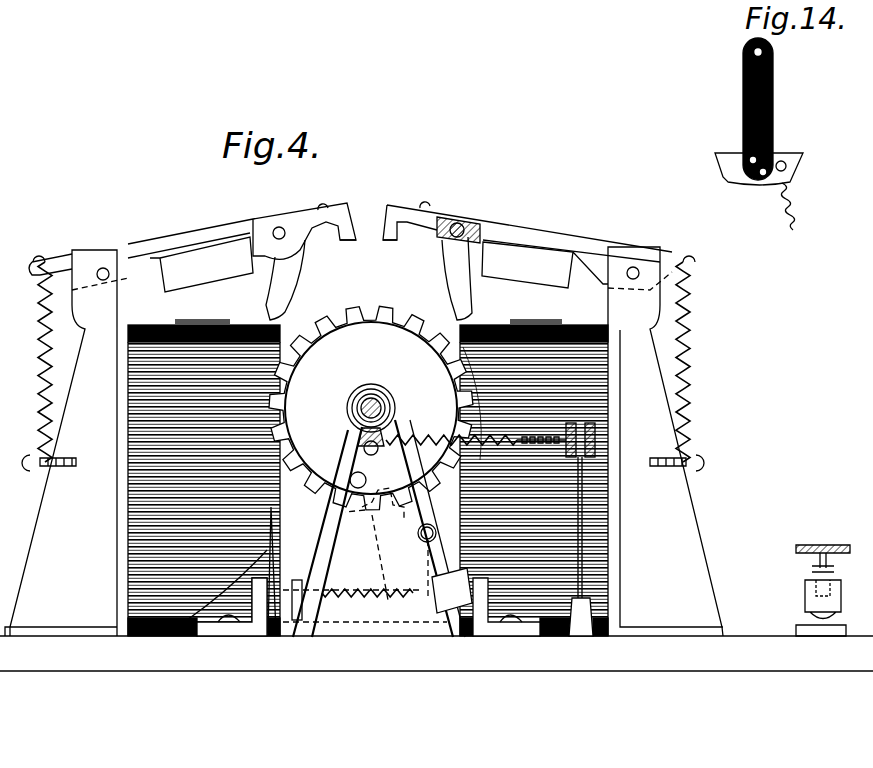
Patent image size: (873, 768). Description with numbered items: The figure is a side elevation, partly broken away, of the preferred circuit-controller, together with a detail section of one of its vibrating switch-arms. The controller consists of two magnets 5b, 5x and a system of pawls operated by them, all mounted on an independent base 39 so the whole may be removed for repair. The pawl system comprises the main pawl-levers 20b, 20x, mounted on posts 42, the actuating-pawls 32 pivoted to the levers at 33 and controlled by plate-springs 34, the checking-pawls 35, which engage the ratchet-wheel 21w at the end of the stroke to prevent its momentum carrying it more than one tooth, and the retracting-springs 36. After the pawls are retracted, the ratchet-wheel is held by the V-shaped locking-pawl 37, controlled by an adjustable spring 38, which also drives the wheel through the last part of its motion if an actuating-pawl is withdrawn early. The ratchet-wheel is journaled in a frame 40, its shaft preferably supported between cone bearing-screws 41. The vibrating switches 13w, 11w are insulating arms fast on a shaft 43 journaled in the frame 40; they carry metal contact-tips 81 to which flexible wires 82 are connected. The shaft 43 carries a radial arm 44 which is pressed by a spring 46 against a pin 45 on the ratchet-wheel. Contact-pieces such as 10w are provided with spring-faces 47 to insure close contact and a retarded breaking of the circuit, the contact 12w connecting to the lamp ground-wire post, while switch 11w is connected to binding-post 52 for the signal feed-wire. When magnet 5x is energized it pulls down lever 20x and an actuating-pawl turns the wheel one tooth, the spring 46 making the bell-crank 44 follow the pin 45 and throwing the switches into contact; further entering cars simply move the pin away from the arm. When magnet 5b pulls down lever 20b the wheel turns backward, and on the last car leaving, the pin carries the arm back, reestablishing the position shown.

In FIG. 4, the magnet 5b is at (217, 313).
In FIG. 4, the magnet 5x is at (521, 320).
In FIG. 4, the contact-piece 10w is at (252, 638).
In FIG. 4, the vibrating switch 11w is at (442, 575).
In FIG. 4, the contact 12w is at (505, 628).
In FIG. 14, the vibrating switch 13w is at (776, 82).
In FIG. 4, the main pawl-lever 20b is at (190, 225).
In FIG. 4, the main pawl-lever 20x is at (548, 236).
In FIG. 4, the ratchet-wheel 21w is at (375, 408).
In FIG. 4, the actuating-pawl 32 is at (287, 276).
In FIG. 4, the pivot 33 is at (279, 227).
In FIG. 4, the plate-spring 34 is at (318, 205).
In FIG. 4, the checking-pawl 35 is at (350, 236).
In FIG. 4, the retracting-spring 36 is at (42, 370).
In FIG. 4, the locking-pawl 37 is at (365, 555).
In FIG. 4, the adjustable spring 38 is at (350, 600).
In FIG. 4, the independent base 39 is at (598, 660).
In FIG. 4, the frame 40 is at (346, 410).
In FIG. 4, the cone bearing-screw 41 is at (382, 410).
In FIG. 4, the post 42 is at (46, 520).
In FIG. 4, the shaft 43 is at (356, 443).
In FIG. 4, the radial arm 44 is at (409, 440).
In FIG. 4, the pin 45 is at (340, 507).
In FIG. 4, the spring 46 is at (478, 448).
In FIG. 4, the spring-face 47 is at (167, 637).
In FIG. 4, the binding-post 52 is at (800, 580).
In FIG. 4, the metal contact-tip 81 is at (356, 402).
In FIG. 14, the metal contact-tip 81 is at (788, 158).
In FIG. 14, the flexible wire 82 is at (792, 204).